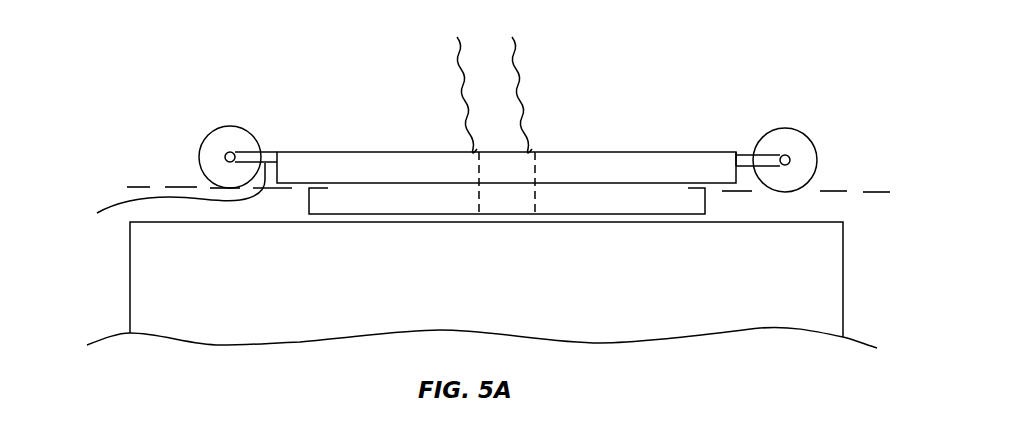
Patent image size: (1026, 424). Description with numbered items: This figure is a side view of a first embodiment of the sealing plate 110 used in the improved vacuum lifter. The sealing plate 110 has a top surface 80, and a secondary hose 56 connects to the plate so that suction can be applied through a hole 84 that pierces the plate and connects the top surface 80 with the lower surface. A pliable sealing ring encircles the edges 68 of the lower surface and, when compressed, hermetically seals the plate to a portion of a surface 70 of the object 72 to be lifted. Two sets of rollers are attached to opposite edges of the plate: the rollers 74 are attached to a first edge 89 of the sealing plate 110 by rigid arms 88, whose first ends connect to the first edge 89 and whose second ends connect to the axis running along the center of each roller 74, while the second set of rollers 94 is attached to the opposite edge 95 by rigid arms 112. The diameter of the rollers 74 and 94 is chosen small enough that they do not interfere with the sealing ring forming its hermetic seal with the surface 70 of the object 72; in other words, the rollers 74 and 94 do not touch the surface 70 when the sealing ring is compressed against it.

The sealing plate 110 is at (309, 90).
The top surface 80 is at (393, 151).
The secondary hoses 56 is at (520, 108).
The second set of rollers 94 is at (205, 150).
The opposite edge 95 is at (287, 153).
The rollers 74 is at (798, 147).
The arms 88 is at (748, 157).
The first edge 89 is at (727, 152).
The rigid arms 112 is at (170, 205).
The edges 68 is at (313, 202).
The hole 84 is at (513, 205).
The object 72 is at (176, 306).
The surface 70 is at (708, 233).